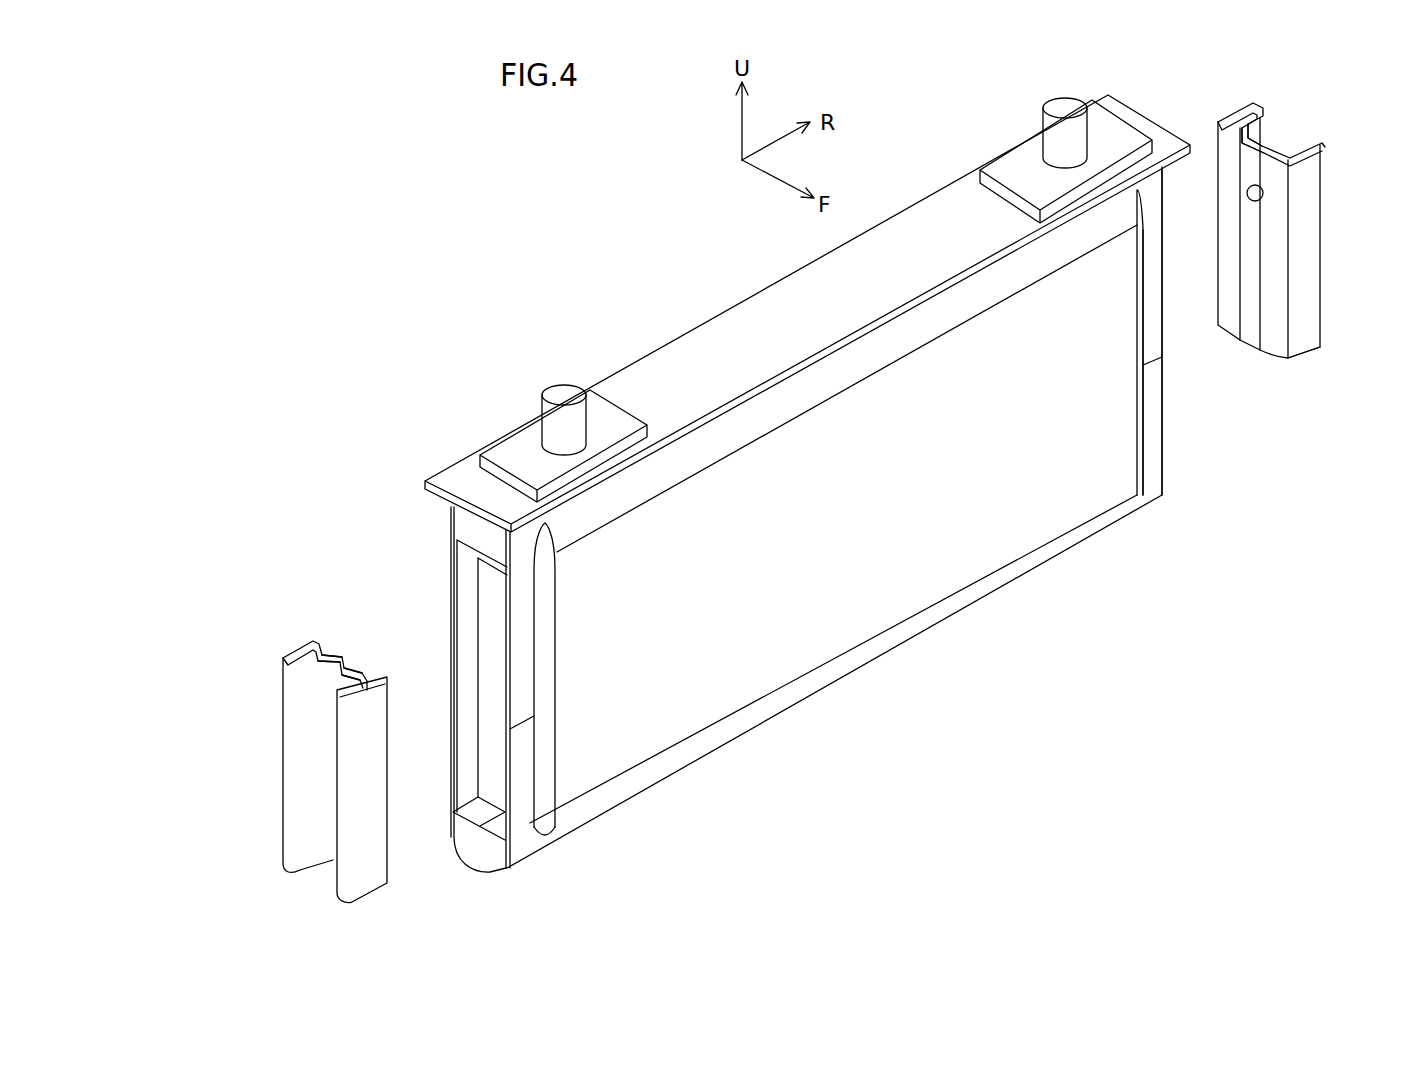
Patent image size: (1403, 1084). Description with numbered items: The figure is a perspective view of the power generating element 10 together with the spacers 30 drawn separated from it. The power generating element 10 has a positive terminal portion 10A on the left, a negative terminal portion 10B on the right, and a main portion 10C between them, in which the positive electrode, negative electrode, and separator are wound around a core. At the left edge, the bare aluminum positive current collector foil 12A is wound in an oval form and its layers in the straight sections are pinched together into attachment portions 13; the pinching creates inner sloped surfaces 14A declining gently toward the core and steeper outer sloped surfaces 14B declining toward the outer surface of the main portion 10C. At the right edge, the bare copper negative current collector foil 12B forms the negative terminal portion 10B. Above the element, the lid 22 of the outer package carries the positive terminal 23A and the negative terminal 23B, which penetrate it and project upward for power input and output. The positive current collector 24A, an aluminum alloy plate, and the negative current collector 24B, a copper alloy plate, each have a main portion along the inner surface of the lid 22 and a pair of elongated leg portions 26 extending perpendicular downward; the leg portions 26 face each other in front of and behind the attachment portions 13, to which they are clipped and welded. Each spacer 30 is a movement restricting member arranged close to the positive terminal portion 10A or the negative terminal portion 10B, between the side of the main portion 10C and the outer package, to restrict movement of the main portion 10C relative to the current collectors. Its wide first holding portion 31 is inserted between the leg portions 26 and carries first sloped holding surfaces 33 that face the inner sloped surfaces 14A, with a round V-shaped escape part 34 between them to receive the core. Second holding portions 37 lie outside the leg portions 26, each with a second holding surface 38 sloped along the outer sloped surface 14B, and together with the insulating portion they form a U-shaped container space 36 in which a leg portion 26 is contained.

The power generating element 10 is at (857, 588).
The positive terminal portion 10A is at (503, 875).
The negative terminal portion 10B is at (1152, 460).
The main portion 10C is at (935, 563).
The positive current collector foil 12A is at (520, 780).
The negative current collector foil 12B is at (1148, 407).
The attachment portions 13 is at (505, 593).
The inner sloped surfaces 14A is at (487, 743).
The outer sloped surfaces 14B is at (545, 745).
The lid 22 is at (765, 313).
The positive terminal 23A is at (567, 388).
The negative terminal 23B is at (1065, 110).
The positive current collector 24A is at (522, 553).
The negative current collector 24B is at (1155, 193).
The leg portions 26 is at (520, 637).
The spacers 30 is at (787, 480).
The first holding portion 31 is at (1278, 323).
The first sloped holding surfaces 33 is at (365, 662).
The escape part 34 is at (1262, 200).
The container space 36 is at (1313, 135).
The second holding portions 37 is at (297, 656).
The second holding surface 38 is at (320, 632).